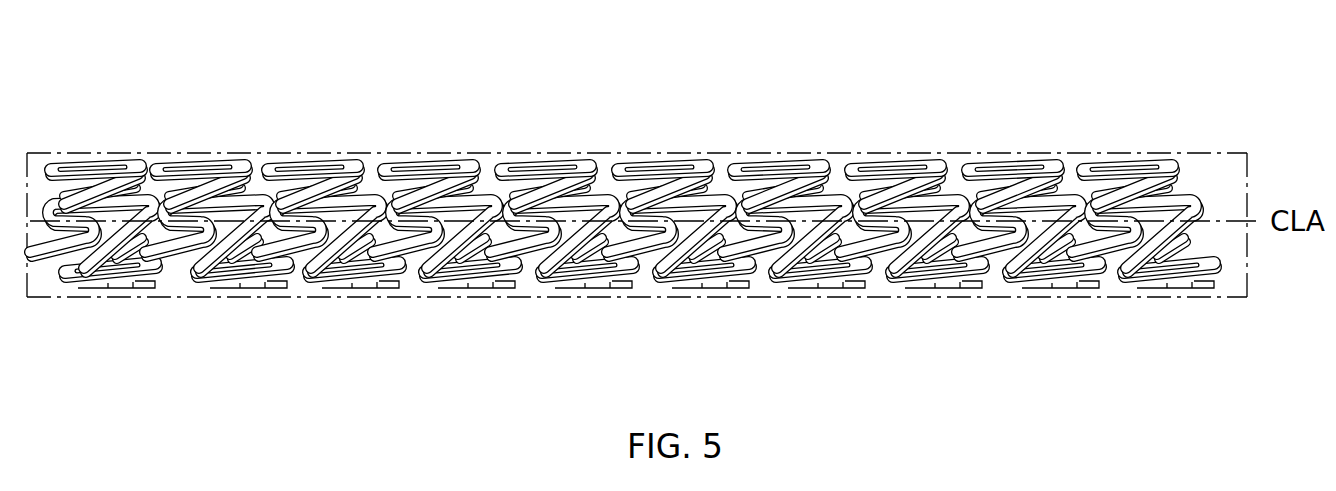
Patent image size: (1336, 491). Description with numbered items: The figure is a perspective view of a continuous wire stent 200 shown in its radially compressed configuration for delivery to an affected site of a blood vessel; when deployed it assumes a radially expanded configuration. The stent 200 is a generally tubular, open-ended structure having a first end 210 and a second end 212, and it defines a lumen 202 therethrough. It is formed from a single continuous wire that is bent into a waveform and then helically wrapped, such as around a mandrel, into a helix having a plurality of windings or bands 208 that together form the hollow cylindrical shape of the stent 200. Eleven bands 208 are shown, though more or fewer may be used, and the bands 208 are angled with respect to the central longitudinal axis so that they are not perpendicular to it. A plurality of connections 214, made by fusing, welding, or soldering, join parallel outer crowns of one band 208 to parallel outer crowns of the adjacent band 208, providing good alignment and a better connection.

The stent 200 is at (622, 185).
The lumen 202 is at (1284, 288).
The bands 208 is at (755, 303).
The first end 210 is at (42, 122).
The second end 212 is at (1284, 148).
The connections 214 is at (858, 167).